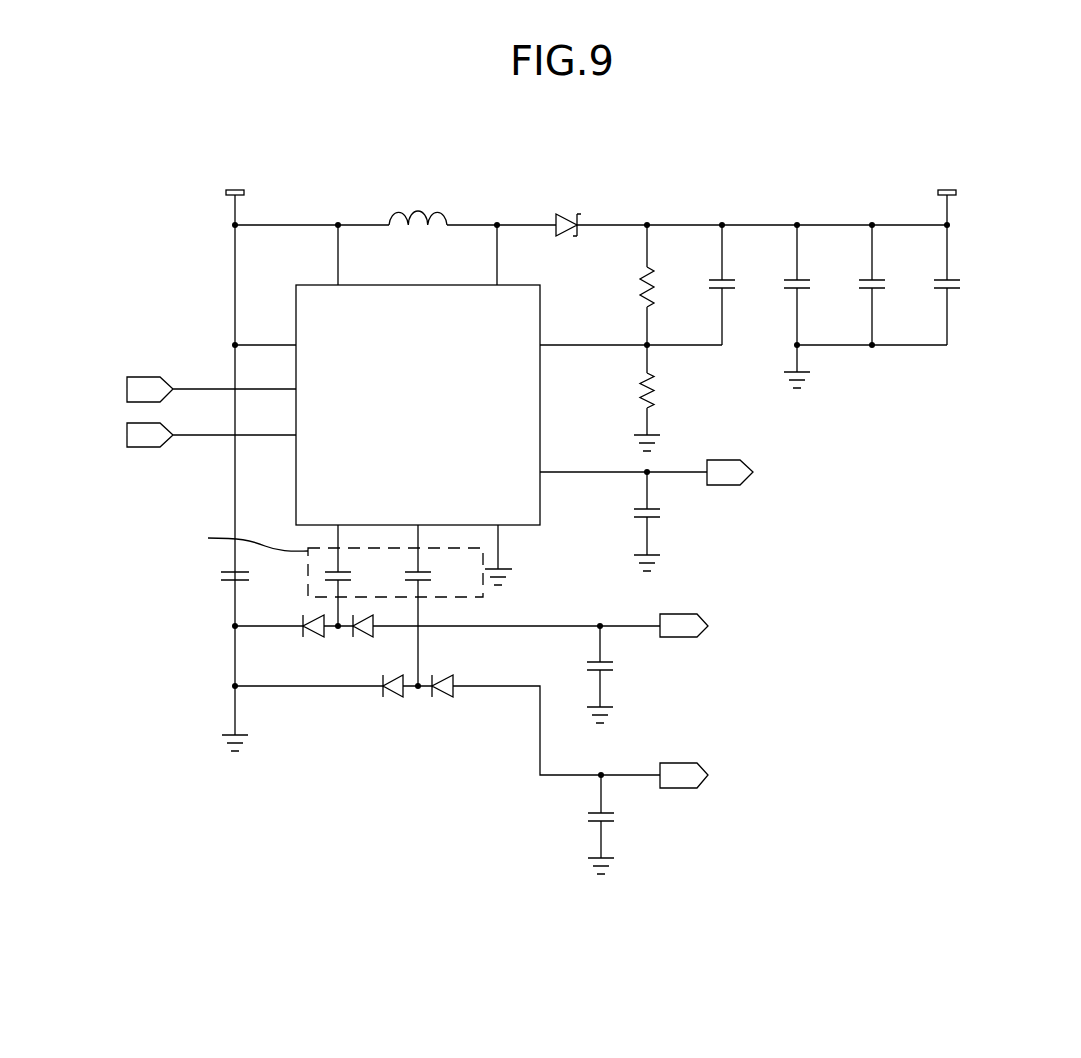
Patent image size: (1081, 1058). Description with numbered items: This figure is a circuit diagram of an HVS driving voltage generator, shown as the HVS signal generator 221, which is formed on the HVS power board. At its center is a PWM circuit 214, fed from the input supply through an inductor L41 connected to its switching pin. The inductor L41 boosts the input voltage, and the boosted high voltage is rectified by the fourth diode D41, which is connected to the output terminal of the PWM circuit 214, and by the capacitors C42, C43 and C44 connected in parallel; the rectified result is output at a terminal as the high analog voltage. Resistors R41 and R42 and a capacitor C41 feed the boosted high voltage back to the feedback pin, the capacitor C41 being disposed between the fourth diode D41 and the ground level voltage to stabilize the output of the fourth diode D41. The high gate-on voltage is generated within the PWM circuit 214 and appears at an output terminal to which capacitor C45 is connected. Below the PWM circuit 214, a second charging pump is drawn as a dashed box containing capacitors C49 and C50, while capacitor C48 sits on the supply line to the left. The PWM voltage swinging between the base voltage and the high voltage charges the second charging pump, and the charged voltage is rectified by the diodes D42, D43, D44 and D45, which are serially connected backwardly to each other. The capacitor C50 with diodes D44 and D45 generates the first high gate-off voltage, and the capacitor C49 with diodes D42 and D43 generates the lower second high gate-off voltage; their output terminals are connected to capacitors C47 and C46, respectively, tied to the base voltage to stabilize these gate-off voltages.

The HVS signal generator 221 is at (1060, 132).
The PWM circuit 214 is at (541, 508).
The inductor L41 is at (418, 205).
The fourth diode D41 is at (569, 209).
The resistor R41 is at (670, 285).
The resistor R42 is at (628, 398).
The capacitor C41 is at (742, 285).
The capacitor C42 is at (817, 306).
The capacitor C43 is at (892, 285).
The capacitor C44 is at (967, 270).
The capacitor C45 is at (668, 521).
The capacitor C46 is at (621, 674).
The capacitor C47 is at (622, 824).
The capacitor C48 is at (256, 577).
The capacitor C49 is at (359, 575).
The capacitor C50 is at (439, 605).
The diode D42 is at (315, 640).
The diode D43 is at (364, 640).
The diode D44 is at (395, 701).
The diode D45 is at (445, 701).